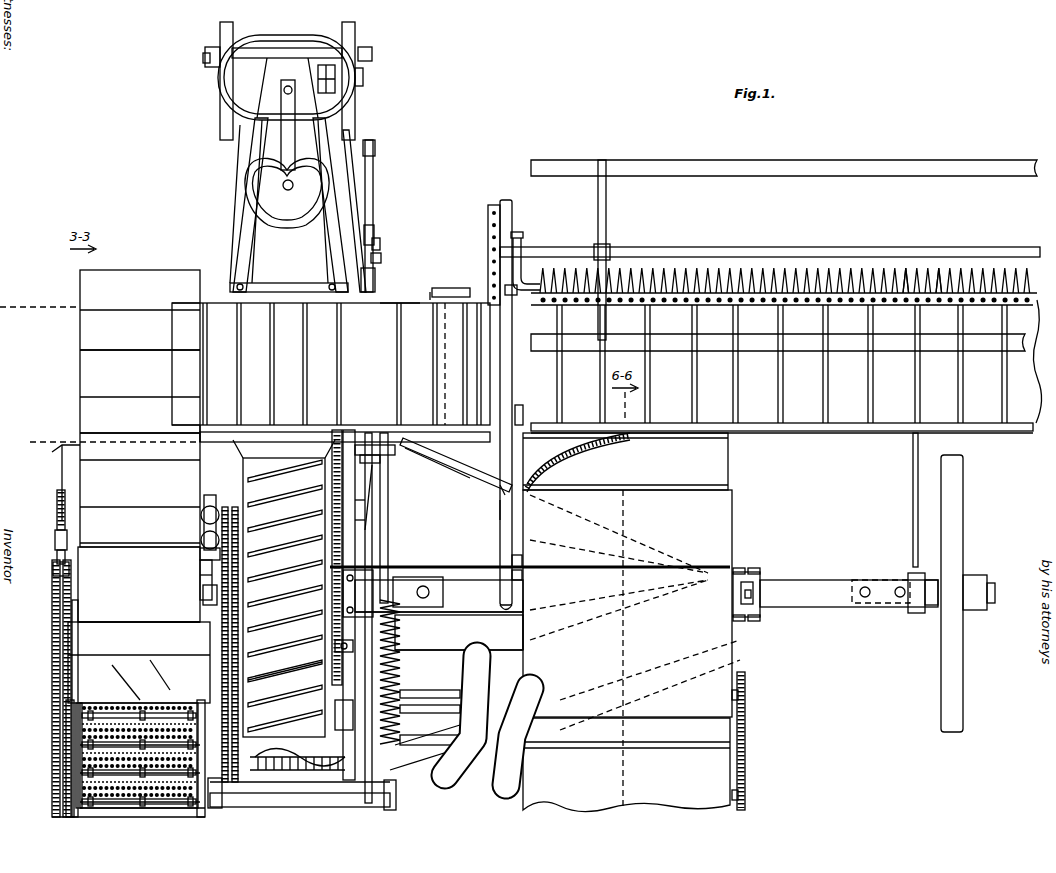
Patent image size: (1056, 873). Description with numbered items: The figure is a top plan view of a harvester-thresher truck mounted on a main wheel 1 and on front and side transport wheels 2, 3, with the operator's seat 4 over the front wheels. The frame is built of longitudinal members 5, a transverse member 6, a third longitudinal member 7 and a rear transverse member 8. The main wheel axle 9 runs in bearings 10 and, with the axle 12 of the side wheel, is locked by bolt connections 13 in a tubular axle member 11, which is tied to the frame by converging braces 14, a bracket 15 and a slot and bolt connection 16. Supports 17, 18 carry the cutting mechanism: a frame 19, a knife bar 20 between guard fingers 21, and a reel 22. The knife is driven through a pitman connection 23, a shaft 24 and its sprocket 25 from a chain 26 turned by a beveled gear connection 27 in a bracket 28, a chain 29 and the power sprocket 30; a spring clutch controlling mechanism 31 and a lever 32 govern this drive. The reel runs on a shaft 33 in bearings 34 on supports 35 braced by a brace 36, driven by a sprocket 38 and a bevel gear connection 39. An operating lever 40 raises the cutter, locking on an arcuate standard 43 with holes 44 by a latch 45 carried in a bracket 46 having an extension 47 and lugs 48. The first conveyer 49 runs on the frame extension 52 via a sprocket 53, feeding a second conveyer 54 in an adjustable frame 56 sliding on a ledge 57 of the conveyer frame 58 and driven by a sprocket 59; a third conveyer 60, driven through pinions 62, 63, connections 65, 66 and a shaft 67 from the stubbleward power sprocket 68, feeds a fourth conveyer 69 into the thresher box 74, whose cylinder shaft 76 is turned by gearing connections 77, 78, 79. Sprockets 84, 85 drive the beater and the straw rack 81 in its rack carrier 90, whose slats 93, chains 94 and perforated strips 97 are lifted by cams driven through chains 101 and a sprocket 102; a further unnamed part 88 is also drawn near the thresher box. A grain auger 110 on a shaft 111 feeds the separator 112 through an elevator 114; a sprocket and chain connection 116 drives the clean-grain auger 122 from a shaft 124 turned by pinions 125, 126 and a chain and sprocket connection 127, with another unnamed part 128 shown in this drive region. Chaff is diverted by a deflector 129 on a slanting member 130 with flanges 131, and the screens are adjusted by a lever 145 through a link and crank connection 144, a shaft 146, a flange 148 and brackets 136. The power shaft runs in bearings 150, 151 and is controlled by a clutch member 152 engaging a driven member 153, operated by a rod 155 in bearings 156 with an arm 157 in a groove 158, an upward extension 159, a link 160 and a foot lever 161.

The main wheel 1 is at (215, 441).
The transport wheels 2 is at (220, 30).
The transport wheel 3 is at (965, 505).
The seat 4 is at (246, 178).
The longitudinally disposed members 5 is at (258, 255).
The transversely extending frame member 6 is at (172, 423).
The third longitudinally extending member 7 is at (52, 452).
The second transversely extending member 8 is at (440, 800).
The axle 9 is at (200, 566).
The bearings 10 is at (200, 576).
The tubular axle member 11 is at (790, 603).
The axle 12 is at (918, 614).
The bolt connections 13 is at (885, 600).
The converging rigid braces 14 is at (500, 512).
The bracket 15 is at (760, 575).
The slot and bolt connection 16 is at (762, 590).
The longitudinally extending support 17 is at (913, 470).
The supporting member 18 is at (365, 505).
The frame 19 is at (972, 433).
The knife bar 20 is at (802, 285).
The guard fingers 21 is at (945, 278).
The reel 22 is at (840, 160).
The pitman connection 23 is at (455, 290).
The shaft 24 is at (431, 298).
The sprocket 25 is at (470, 470).
The chain 26 is at (500, 492).
The beveled gear connection 27 is at (395, 455).
The bracket 28 is at (378, 462).
The chain 29 is at (305, 462).
The power sprocket 30 is at (365, 522).
The spring clutch controlling mechanism 31 is at (372, 490).
The lever 32 is at (331, 364).
The shaft 33 is at (560, 250).
The bearings 34 is at (518, 238).
The supports 35 is at (488, 210).
The brace 36 is at (190, 300).
The sprocket 38 is at (522, 424).
The bevel gear connection 39 is at (525, 240).
The operating lever 40 is at (374, 182).
The arcuate standard 43 is at (326, 280).
The holes 44 is at (295, 286).
The latch 45 is at (375, 243).
The bracket 46 is at (382, 259).
The extension 47 is at (381, 246).
The spaced lugs 48 is at (378, 280).
The first apron or conveyer 49 is at (850, 408).
The extension 52 is at (393, 300).
The sprocket 53 is at (430, 462).
The second conveyer 54 is at (232, 270).
The adjustable frame 56 is at (500, 540).
The ledge 57 is at (607, 252).
The conveyer frame 58 is at (80, 347).
The sprocket 59 is at (320, 438).
The third conveyer 60 is at (88, 302).
The pinion 62 is at (204, 508).
The pinion 63 is at (204, 535).
The chain and sprocket connection 65 is at (204, 520).
The chain and sprocket connection 66 is at (200, 552).
The shaft 67 is at (280, 678).
The stubbleward power sprocket 68 is at (243, 500).
The fourth conveyer 69 is at (78, 428).
The framework or box 74 is at (56, 538).
The shaft 76 is at (57, 558).
The gearing connection 77 is at (52, 590).
The gearing connection 78 is at (57, 516).
The gearing connection 79 is at (60, 490).
The straw rack 81 is at (78, 800).
The sprocket 84 is at (53, 570).
The sprocket 85 is at (78, 771).
The rail 88 is at (78, 742).
The rack carrier 90 is at (78, 807).
The slats 93 is at (50, 705).
The chains 94 is at (86, 710).
The perforated metal strip 97 is at (100, 712).
The chains 101 is at (63, 660).
The sprocket 102 is at (63, 640).
The grain auger 110 is at (530, 752).
The shaft 111 is at (400, 622).
The separator 112 is at (735, 520).
The elevator 114 is at (545, 732).
The sprocket and chain connection 116 is at (748, 700).
The auger 122 is at (517, 667).
The shaft 124 is at (400, 668).
The pinion 125 is at (450, 782).
The pinion 126 is at (405, 694).
The chain and sprocket connection 127 is at (430, 612).
The beam 128 is at (400, 650).
The deflector 129 is at (735, 440).
The slanting member 130 is at (705, 460).
The flanges 131 is at (405, 710).
The brackets 136 is at (302, 780).
The link and crank connection 144 is at (522, 618).
The lever 145 is at (522, 562).
The shaft 146 is at (522, 575).
The flange 148 is at (372, 52).
The bearing 150 is at (140, 668).
The bearing 151 is at (284, 597).
The movable clutch member 152 is at (190, 655).
The second clutch member 153 is at (172, 690).
The transverse rod 155 is at (52, 816).
The bearings 156 is at (140, 700).
The arm 157 is at (196, 622).
The radial groove 158 is at (203, 595).
The upward extension 159 is at (445, 742).
The link 160 is at (335, 147).
The foot lever 161 is at (365, 88).